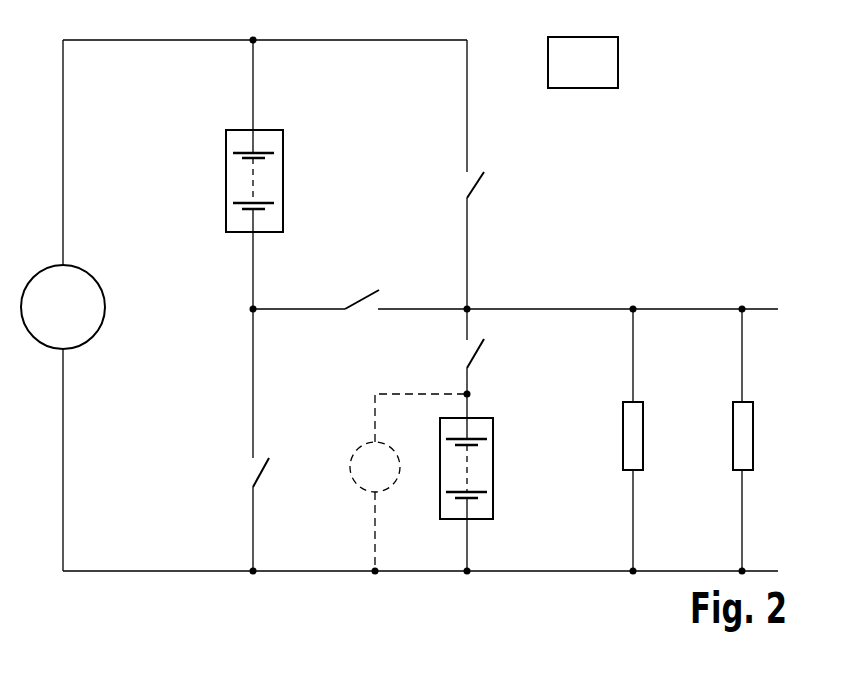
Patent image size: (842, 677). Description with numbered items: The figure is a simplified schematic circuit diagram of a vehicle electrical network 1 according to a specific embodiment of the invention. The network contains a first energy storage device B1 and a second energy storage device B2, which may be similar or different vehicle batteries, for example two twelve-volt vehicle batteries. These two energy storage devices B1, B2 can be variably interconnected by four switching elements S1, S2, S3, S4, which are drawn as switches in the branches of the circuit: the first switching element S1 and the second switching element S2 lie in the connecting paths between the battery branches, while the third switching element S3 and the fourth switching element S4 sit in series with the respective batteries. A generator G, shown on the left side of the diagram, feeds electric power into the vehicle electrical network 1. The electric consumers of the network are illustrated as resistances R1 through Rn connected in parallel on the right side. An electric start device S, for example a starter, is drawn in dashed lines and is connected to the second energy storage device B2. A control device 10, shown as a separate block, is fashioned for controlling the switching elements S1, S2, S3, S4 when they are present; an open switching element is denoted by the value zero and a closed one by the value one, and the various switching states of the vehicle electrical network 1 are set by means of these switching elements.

The vehicle electrical network 1 is at (402, 306).
The control device 10 is at (618, 69).
The generator G is at (63, 307).
The first energy storage device B1 is at (271, 181).
The second energy storage device B2 is at (485, 468).
The electric start device S is at (408, 482).
The first switching element S1 is at (490, 193).
The second switching element S2 is at (357, 283).
The third switching element S3 is at (275, 482).
The fourth switching element S4 is at (491, 359).
The first resistance R1 is at (648, 420).
The n-th resistance Rn is at (758, 420).